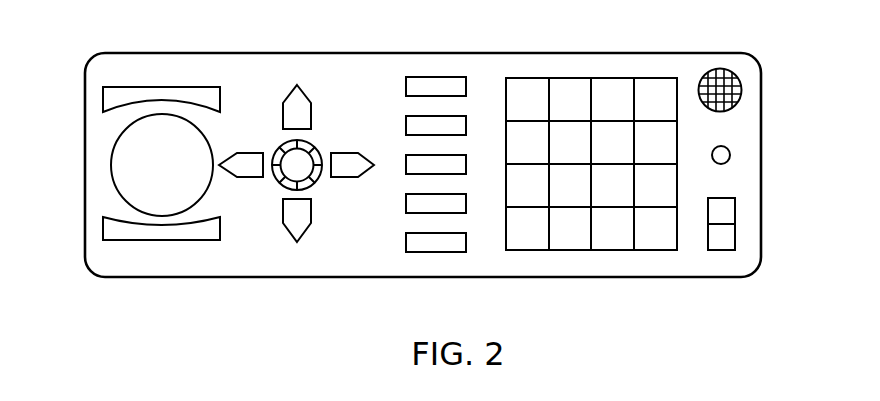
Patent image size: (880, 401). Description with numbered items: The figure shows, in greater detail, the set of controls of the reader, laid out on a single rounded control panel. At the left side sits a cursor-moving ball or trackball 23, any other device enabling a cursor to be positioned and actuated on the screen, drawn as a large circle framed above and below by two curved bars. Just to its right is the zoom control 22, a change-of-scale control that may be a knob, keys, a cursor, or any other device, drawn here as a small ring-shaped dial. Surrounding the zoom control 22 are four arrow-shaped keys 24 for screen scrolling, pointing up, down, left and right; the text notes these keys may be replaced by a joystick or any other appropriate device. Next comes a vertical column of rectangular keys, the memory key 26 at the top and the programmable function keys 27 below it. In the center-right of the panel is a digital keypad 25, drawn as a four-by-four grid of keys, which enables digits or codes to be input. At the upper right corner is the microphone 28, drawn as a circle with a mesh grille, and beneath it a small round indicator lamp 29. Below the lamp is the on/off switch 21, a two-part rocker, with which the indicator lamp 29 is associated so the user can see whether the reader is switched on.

The on/off switch 21 is at (725, 250).
The zoom control 22 is at (289, 155).
The cursor-moving ball 23 is at (117, 156).
The screen scrolling keys 24 is at (290, 85).
The digital keypad 25 is at (575, 241).
The memory key 26 is at (442, 87).
The programmable function keys 27 is at (440, 125).
The microphone 28 is at (725, 70).
The indicator lamp 29 is at (715, 147).